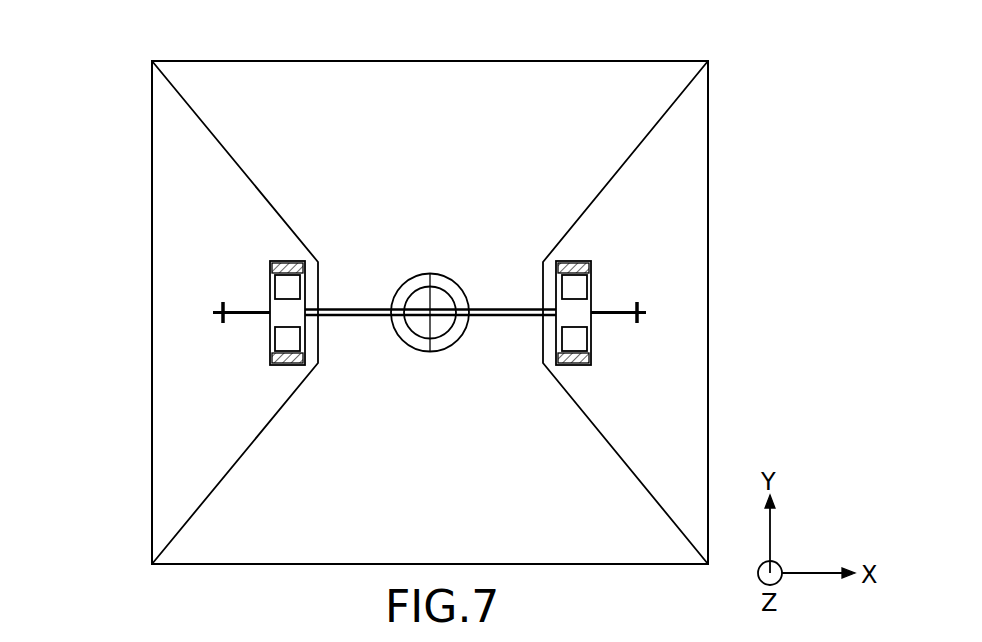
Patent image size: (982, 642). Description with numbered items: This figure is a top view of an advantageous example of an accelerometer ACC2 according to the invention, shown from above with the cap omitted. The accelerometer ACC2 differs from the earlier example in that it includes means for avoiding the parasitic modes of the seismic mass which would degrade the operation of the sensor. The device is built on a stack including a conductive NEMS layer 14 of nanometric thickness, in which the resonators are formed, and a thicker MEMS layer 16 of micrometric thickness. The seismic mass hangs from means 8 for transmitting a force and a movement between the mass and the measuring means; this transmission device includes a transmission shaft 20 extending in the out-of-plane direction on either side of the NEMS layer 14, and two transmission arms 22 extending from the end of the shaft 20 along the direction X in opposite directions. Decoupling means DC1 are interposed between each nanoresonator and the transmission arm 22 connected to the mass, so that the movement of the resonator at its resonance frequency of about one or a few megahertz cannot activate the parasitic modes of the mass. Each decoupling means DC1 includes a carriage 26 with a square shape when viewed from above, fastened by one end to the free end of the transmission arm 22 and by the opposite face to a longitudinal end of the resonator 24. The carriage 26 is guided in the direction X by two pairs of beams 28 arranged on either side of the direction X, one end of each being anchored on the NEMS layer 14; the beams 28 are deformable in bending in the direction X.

The means for transmitting a force and a movement 8 is at (462, 271).
The conductive layer 14 is at (697, 224).
The layer with a micrometric thickness 16 is at (614, 70).
The transmission shaft 20 is at (405, 340).
The transmission arm 22 is at (362, 308).
The resonator 24 is at (246, 306).
The carriage 26 is at (282, 319).
The beams 28 is at (274, 277).
The accelerometer ACC2 is at (748, 114).
The decoupling means DC1 is at (250, 340).